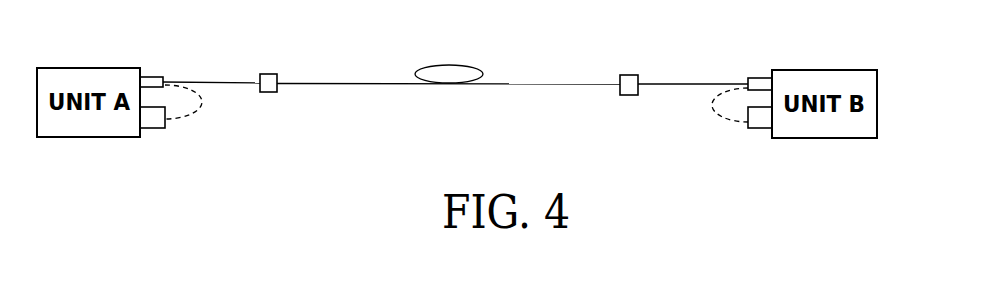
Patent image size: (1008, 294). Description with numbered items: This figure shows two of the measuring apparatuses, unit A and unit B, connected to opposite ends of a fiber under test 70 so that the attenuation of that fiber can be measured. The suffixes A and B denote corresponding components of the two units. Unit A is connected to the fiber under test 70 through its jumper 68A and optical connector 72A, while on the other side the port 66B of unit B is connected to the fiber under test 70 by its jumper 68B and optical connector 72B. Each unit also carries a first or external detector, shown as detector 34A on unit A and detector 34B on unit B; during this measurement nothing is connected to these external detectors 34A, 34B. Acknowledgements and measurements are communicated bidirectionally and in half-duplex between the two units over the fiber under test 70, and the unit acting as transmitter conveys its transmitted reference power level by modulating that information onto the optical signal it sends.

The first or external detector 34A is at (165, 130).
The first or external detector 34B is at (747, 128).
The port 66B is at (757, 77).
The jumper 68A is at (162, 77).
The jumper 68B is at (662, 87).
The fiber under test 70 is at (382, 83).
The optical connector 72A is at (277, 72).
The optical connector 72B is at (638, 73).